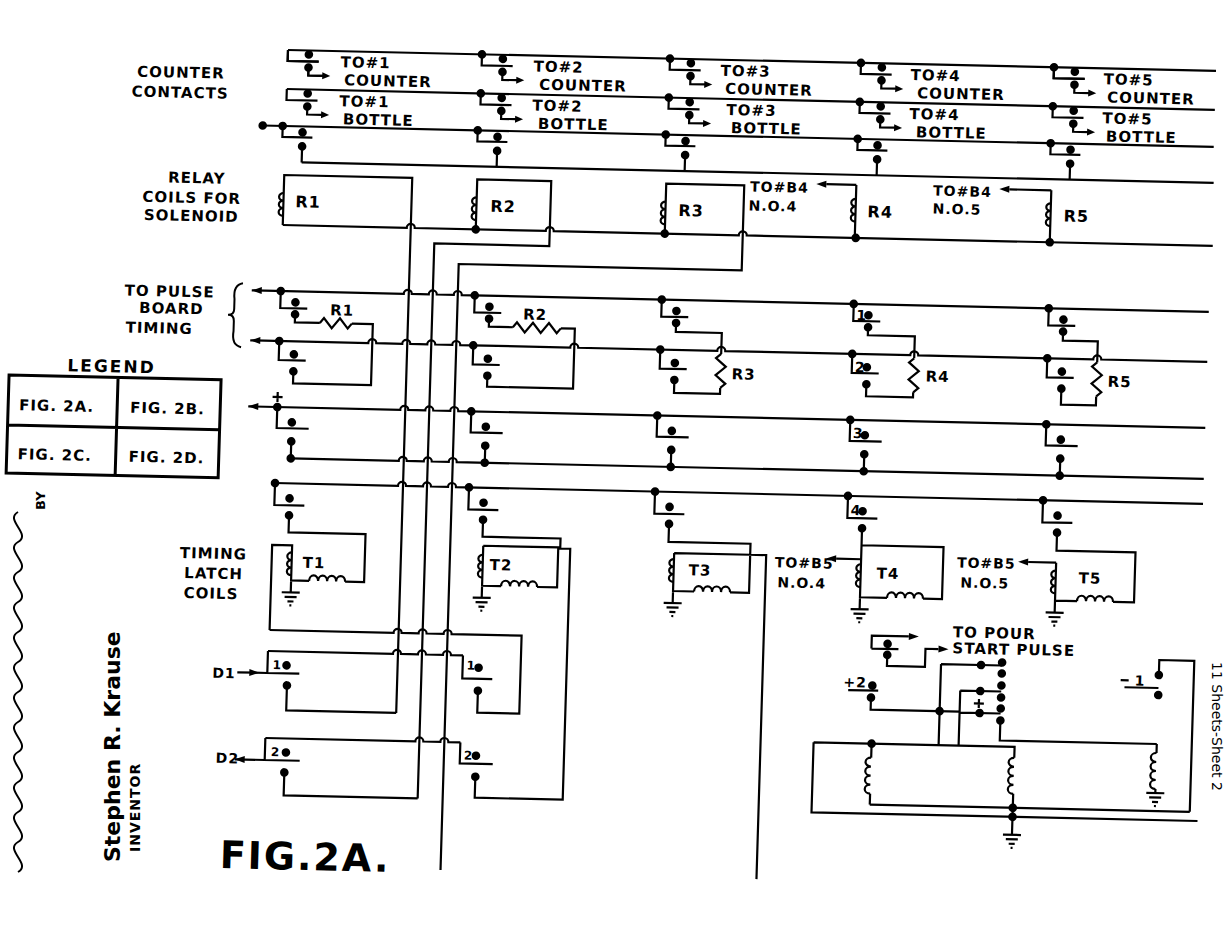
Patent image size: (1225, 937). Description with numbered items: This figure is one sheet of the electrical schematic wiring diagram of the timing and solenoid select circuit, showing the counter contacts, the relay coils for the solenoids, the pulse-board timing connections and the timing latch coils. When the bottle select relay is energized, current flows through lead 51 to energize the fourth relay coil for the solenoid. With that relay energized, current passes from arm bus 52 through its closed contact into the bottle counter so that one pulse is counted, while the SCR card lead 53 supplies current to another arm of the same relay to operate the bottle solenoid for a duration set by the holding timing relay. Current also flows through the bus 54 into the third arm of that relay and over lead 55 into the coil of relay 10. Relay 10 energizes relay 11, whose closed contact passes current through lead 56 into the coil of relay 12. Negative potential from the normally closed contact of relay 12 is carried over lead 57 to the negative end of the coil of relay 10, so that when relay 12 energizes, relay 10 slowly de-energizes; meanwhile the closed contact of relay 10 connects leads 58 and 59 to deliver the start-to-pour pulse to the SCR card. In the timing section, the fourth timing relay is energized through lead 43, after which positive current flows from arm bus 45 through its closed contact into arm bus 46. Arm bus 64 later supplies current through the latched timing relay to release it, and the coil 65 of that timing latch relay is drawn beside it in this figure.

The arm bus 52 is at (288, 48).
The SCR card lead 53 is at (1043, 80).
The bus 54 is at (1186, 126).
The lead 55 is at (958, 155).
The lead 51 is at (841, 172).
The arm bus 45 is at (974, 406).
The arm bus 46 is at (968, 458).
The arm bus 64 is at (1121, 484).
The lead 43 is at (871, 530).
The timing latch coil T4 65 is at (923, 578).
The lead 58 is at (906, 622).
The lead 59 is at (921, 652).
The lead 56 is at (1133, 724).
The lead 57 is at (1091, 791).
The relay 10 is at (882, 772).
The relay 11 is at (1024, 776).
The relay 12 is at (1164, 775).